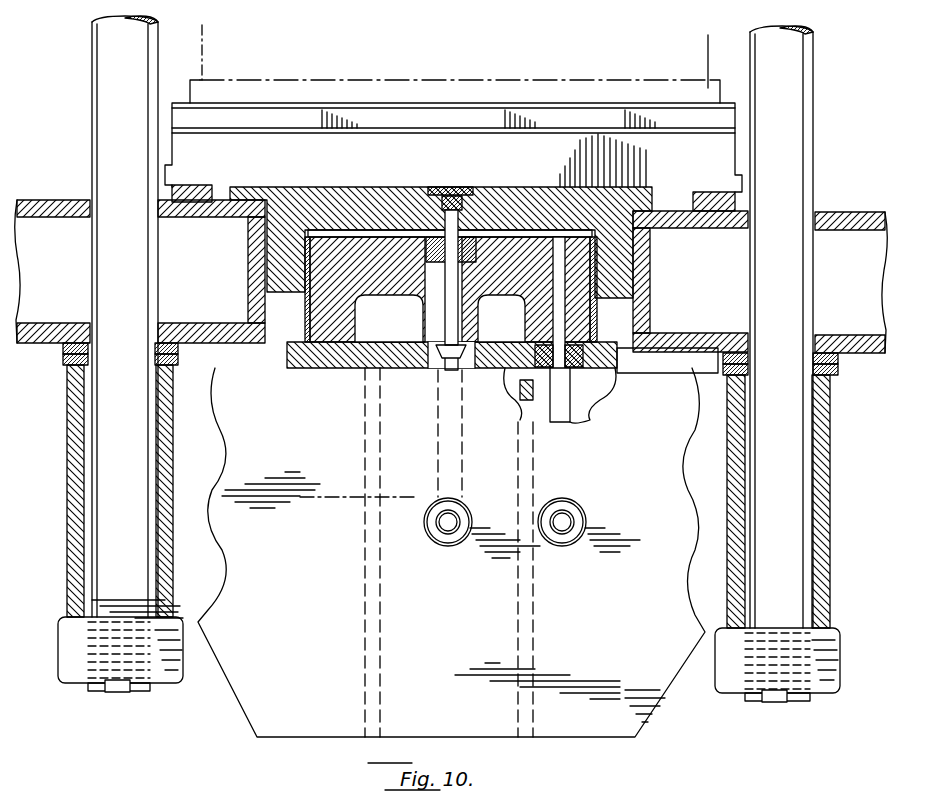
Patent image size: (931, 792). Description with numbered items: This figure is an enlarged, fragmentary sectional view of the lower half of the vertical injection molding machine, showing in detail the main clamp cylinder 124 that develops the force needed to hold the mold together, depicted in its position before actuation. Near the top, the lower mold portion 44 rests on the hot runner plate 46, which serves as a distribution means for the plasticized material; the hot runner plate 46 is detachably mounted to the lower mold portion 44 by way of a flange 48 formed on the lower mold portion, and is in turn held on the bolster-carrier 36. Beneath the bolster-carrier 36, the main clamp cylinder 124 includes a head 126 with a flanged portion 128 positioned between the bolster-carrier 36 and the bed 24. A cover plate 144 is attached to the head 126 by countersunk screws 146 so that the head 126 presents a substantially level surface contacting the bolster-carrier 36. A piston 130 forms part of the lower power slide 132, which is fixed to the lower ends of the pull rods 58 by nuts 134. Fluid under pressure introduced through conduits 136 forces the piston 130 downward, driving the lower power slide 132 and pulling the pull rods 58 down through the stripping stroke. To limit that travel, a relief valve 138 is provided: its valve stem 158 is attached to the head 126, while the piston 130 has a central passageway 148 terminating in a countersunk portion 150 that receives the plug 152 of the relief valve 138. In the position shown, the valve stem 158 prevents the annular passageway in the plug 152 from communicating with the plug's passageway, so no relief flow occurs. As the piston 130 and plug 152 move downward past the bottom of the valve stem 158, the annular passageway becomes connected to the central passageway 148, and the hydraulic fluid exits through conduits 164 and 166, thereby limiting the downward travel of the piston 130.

The bed 24 is at (58, 200).
The bolster-carrier 36 is at (624, 169).
The lower mold portion 44 is at (708, 58).
The hot runner plate 46 is at (560, 118).
The flange 48 is at (622, 88).
The pull rods 58 is at (98, 92).
The main clamp cylinder 124 is at (380, 178).
The head 126 is at (346, 200).
The flanged portion 128 is at (244, 186).
The piston 130 is at (602, 325).
The lower power slide 132 is at (70, 526).
The nuts 134 is at (80, 680).
The conduits 136 is at (570, 520).
The relief valve 138 is at (470, 224).
The cover plate 144 is at (259, 781).
The countersunk screws 146 is at (172, 791).
The central passageway 148 is at (446, 314).
The countersunk portion 150 is at (436, 266).
The plug 152 is at (462, 243).
The valve stem 158 is at (466, 268).
The conduit 164 is at (440, 442).
The conduit 166 is at (446, 530).